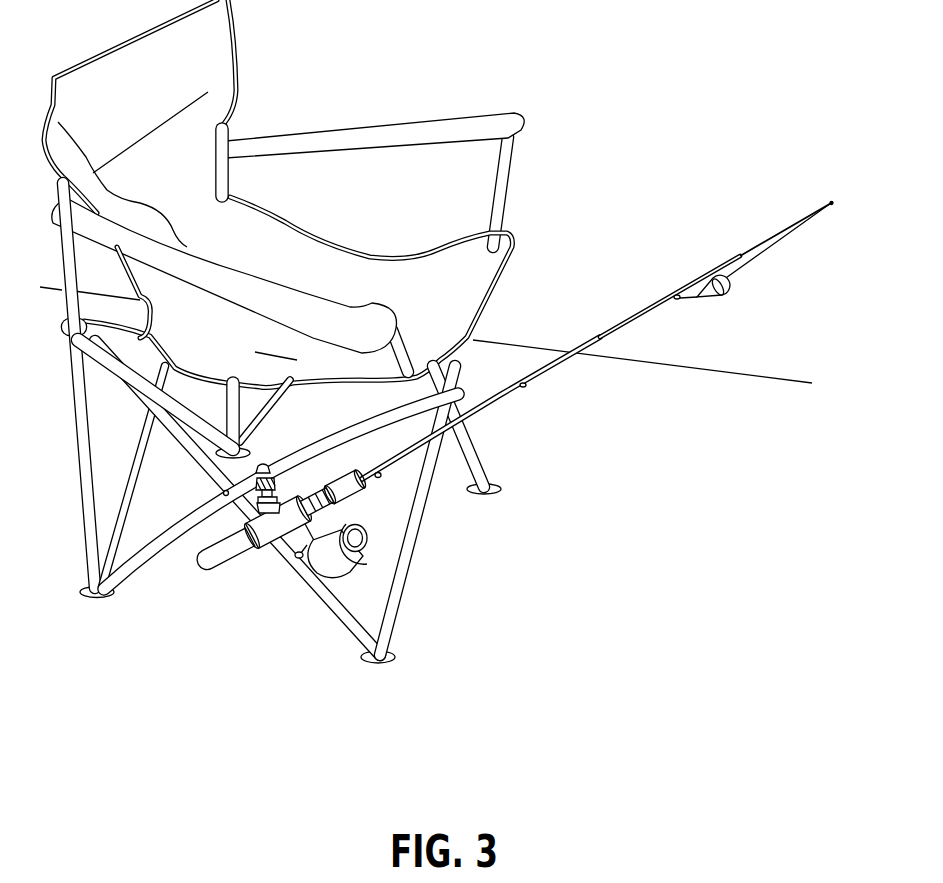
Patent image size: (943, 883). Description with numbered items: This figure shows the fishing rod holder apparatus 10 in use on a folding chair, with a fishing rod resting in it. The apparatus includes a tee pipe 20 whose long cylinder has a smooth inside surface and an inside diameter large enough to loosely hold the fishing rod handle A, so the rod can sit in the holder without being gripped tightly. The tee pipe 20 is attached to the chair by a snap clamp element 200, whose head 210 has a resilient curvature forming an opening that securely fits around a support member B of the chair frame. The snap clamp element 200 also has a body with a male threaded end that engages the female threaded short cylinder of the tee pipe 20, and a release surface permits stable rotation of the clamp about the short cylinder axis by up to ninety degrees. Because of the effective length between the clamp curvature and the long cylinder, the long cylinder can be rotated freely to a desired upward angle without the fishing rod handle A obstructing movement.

The fishing rod holder apparatus 10 is at (241, 483).
The tee pipe 20 is at (258, 511).
The snap clamp element 200 is at (278, 492).
The head 210 is at (259, 465).
The fishing rod handle A is at (232, 556).
The support member B is at (344, 437).